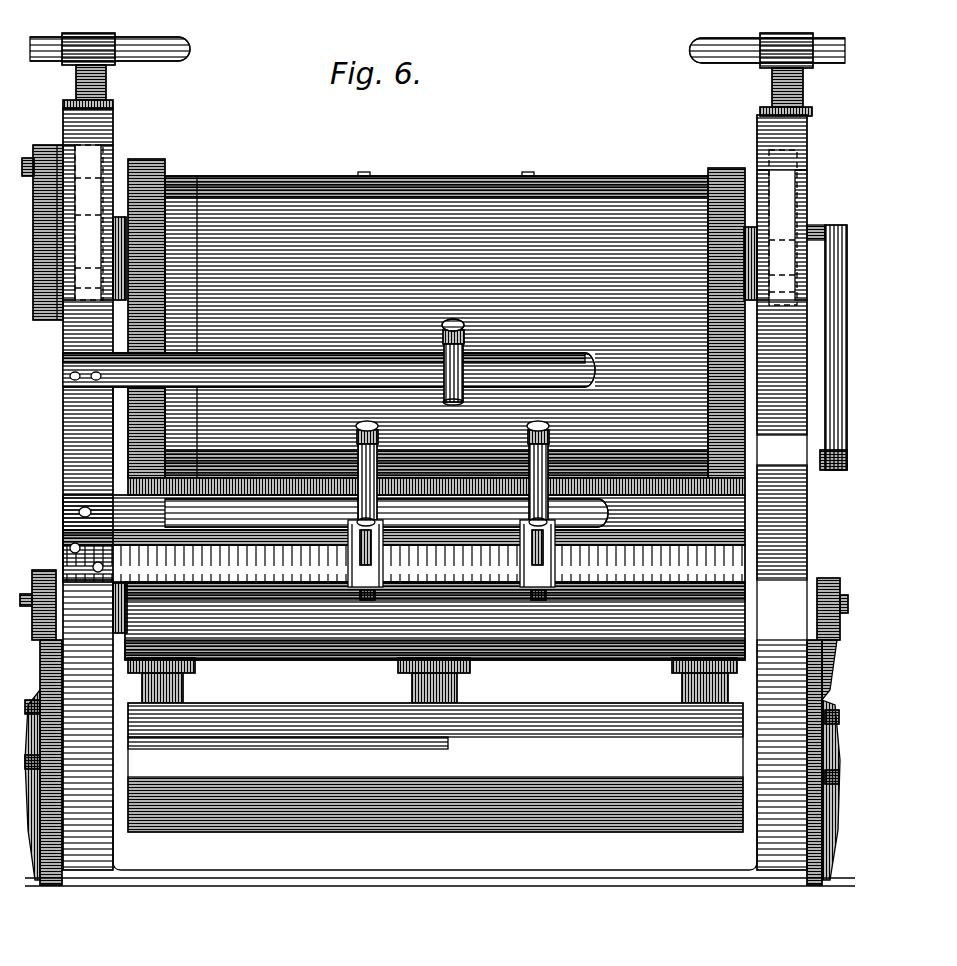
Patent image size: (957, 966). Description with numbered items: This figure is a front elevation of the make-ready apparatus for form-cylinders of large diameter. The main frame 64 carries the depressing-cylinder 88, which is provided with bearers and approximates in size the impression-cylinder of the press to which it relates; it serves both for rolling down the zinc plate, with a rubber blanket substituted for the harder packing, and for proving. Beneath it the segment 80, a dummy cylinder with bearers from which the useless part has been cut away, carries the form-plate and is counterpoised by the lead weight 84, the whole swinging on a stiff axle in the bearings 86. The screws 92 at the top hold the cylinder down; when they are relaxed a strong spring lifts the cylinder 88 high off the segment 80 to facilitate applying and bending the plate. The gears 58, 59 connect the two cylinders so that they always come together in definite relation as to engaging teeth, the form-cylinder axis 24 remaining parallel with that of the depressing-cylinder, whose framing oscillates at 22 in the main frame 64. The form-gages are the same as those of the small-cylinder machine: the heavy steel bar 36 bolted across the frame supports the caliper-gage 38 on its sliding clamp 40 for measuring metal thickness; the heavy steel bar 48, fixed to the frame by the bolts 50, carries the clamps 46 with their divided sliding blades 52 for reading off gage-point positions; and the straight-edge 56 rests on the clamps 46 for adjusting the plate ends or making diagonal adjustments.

The oscillation point 22 is at (113, 597).
The axis of the form-cylinder 24 is at (115, 245).
The heavy steel bar 36 is at (302, 373).
The caliper-gage 38 is at (453, 318).
The sliding clamp 40 is at (443, 387).
The clamps 46 is at (348, 560).
The heavy steel bar 48 is at (404, 563).
The bolts 50 is at (80, 549).
The sliding blades 52 is at (372, 455).
The straight-edge 56 is at (404, 511).
The gear 58 is at (151, 160).
The gear 59 is at (128, 427).
The main frame 64 is at (72, 418).
The segment 80 is at (267, 660).
The lead weight 84 is at (435, 767).
The bearings 86 is at (62, 590).
The cylinder 88 is at (455, 323).
The screws 92 is at (104, 89).